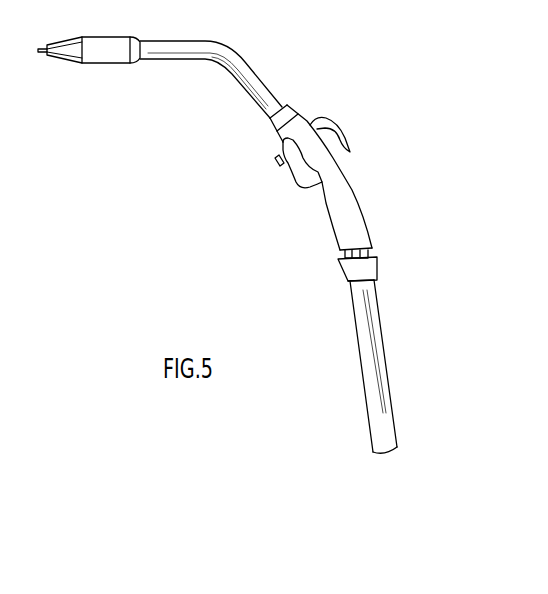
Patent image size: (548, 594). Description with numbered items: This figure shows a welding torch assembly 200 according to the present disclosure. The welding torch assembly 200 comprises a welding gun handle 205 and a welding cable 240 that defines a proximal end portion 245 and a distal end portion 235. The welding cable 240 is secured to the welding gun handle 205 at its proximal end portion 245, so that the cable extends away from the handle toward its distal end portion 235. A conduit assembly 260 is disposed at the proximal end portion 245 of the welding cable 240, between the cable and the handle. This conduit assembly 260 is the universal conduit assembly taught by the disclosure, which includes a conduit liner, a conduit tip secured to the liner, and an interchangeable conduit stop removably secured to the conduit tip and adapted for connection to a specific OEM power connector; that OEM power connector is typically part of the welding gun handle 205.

The welding torch assembly 200 is at (155, 186).
The welding gun handle 205 is at (343, 203).
The conduit assembly 260 is at (363, 268).
The proximal end portion 245 is at (350, 284).
The welding cable 240 is at (367, 370).
The distal end portion 235 is at (377, 440).